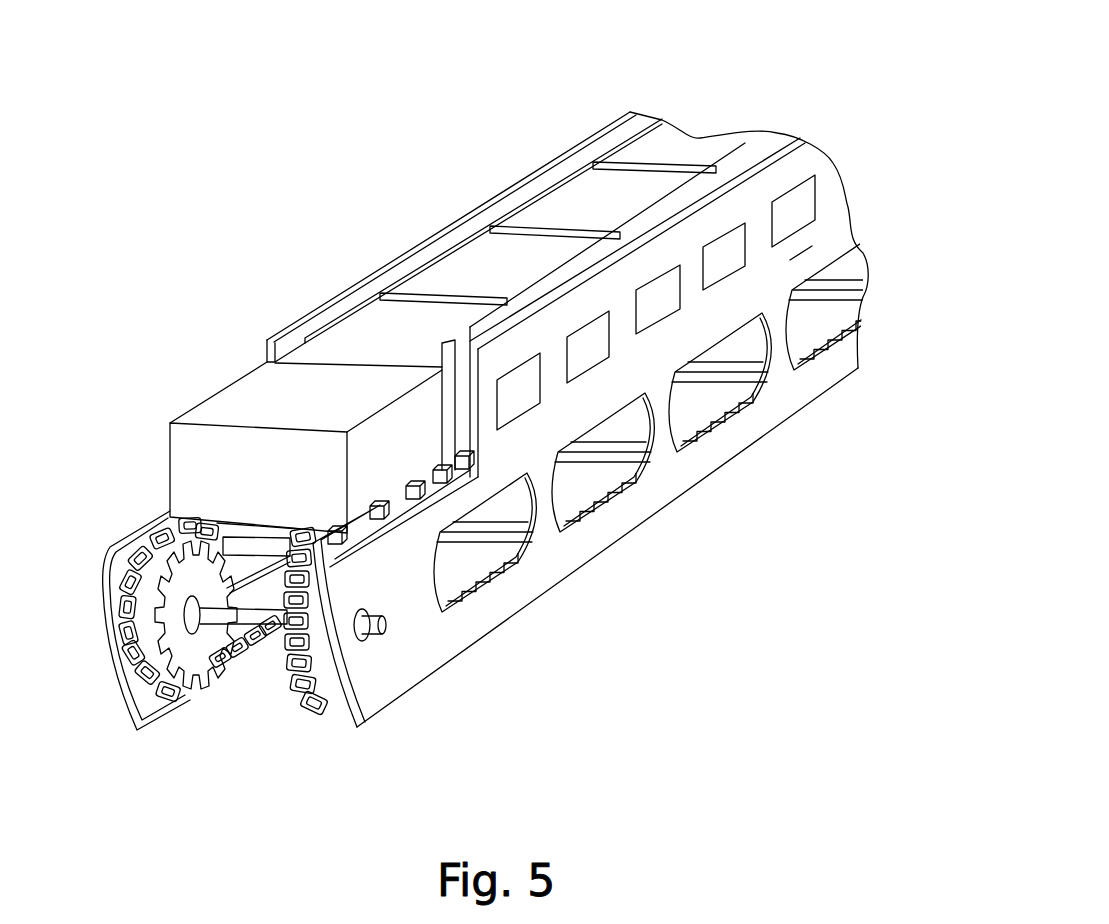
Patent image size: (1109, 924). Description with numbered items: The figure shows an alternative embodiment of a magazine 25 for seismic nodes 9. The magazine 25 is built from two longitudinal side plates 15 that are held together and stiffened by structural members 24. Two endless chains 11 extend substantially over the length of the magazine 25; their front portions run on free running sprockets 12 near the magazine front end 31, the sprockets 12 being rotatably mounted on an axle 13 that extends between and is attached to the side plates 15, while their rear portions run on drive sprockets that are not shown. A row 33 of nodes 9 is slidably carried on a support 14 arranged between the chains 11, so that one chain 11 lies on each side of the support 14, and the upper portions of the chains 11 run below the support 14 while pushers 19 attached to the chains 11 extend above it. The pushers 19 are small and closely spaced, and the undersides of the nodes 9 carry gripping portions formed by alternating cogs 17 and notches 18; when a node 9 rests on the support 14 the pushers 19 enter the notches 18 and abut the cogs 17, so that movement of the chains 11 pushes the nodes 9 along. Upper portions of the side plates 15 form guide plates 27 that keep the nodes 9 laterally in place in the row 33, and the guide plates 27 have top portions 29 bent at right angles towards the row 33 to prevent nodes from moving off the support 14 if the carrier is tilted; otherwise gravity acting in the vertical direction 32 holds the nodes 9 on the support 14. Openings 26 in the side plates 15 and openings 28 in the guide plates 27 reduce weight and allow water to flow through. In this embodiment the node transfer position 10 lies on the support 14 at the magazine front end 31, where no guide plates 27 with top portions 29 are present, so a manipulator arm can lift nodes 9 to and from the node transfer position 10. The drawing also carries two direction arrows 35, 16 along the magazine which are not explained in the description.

The nodes 9 is at (377, 330).
The node transfer position 10 is at (145, 462).
The endless chains 11 is at (840, 350).
The free running sprockets 12 is at (180, 638).
The axle 13 is at (275, 617).
The support 14 is at (247, 552).
The side plates 15 is at (783, 398).
The direction of movement 16 is at (888, 50).
The cogs 17 is at (410, 503).
The notches 18 is at (420, 482).
The pushers 19 is at (412, 488).
The structural members 24 is at (597, 453).
The magazine 25 is at (447, 155).
The openings in the side plates 26 is at (700, 405).
The guide plates 27 is at (810, 243).
The openings in the guide plates 28 is at (800, 202).
The top portions 29 is at (740, 177).
The magazine front end 31 is at (88, 568).
The vertical direction 32 is at (190, 308).
The row 33 is at (582, 195).
The direction of movement 35 is at (763, 102).